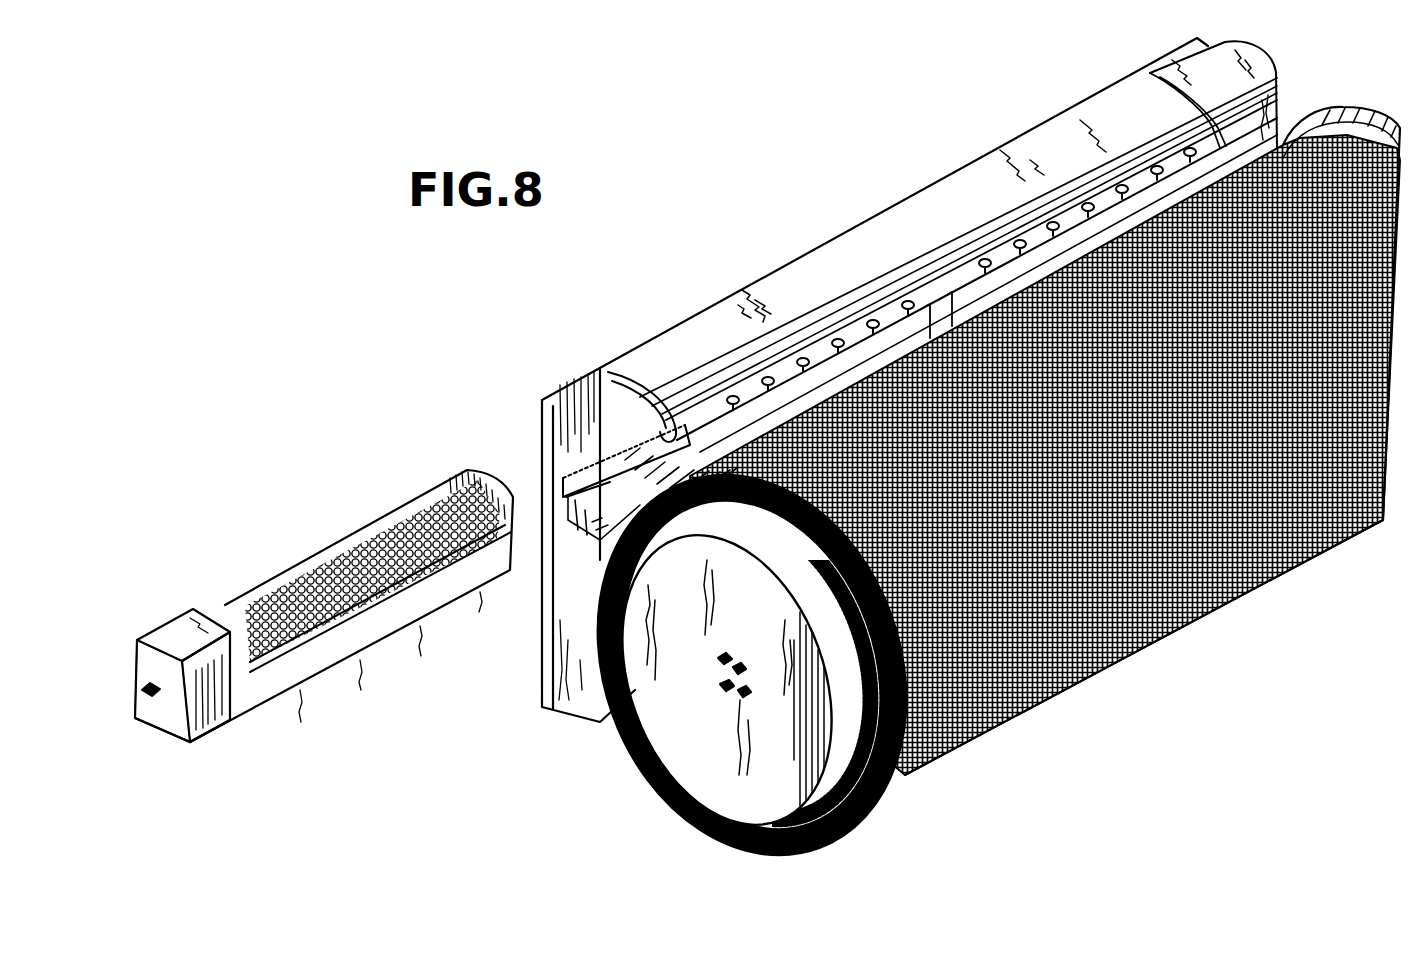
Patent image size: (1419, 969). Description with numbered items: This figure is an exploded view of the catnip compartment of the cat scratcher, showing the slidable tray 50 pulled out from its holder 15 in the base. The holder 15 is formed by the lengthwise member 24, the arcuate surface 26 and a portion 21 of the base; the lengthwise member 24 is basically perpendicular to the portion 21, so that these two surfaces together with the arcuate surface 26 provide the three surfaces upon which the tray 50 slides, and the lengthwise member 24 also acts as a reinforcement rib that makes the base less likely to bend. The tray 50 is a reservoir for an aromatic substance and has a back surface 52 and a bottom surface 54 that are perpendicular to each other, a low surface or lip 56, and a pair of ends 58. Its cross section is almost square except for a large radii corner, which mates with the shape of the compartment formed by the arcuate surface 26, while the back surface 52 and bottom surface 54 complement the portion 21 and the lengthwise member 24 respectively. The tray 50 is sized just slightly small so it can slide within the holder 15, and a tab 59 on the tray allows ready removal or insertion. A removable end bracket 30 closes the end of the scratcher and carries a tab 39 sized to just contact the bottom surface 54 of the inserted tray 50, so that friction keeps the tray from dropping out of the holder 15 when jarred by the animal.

The holder 15 is at (722, 418).
The portion of the base 21 is at (575, 386).
The lengthwise member 24 is at (560, 500).
The arcuate surface 26 is at (832, 258).
The end bracket 30 is at (700, 748).
The tab 39 is at (598, 462).
The tray 50 is at (351, 605).
The back surface 52 is at (160, 698).
The bottom surface 54 is at (173, 733).
The lip 56 is at (370, 628).
The end 58 is at (545, 462).
The tab 59 is at (147, 684).